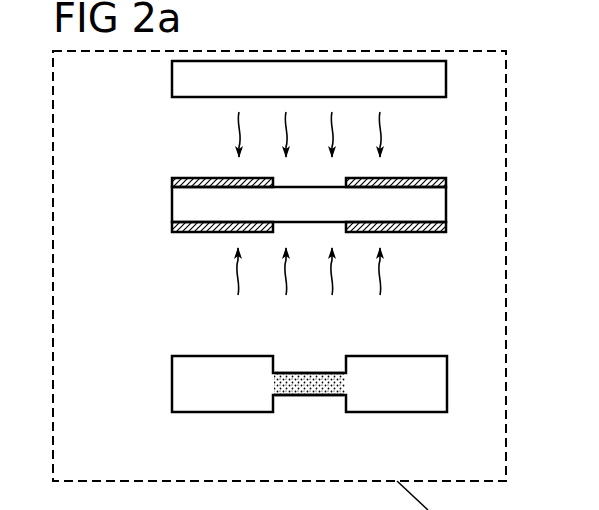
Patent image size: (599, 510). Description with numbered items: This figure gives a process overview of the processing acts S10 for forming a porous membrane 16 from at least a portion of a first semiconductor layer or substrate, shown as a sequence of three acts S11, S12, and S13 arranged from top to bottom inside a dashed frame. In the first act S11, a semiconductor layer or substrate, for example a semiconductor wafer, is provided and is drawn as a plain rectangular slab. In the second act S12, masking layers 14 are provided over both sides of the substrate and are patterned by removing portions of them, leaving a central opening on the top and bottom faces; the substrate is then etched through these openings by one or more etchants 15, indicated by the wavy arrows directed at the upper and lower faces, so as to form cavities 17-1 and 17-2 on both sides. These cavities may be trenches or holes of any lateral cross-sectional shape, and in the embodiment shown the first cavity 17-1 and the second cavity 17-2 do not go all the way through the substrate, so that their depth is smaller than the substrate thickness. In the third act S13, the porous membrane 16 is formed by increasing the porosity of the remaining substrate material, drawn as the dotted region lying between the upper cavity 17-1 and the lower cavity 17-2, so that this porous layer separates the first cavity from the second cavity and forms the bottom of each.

The masking layer 14 is at (447, 178).
The etchant 15 is at (399, 134).
The porous membrane 16 is at (289, 404).
The first cavity 17-1 is at (326, 359).
The second cavity 17-2 is at (331, 404).
The processing acts of forming a porous membrane S10 is at (506, 260).
The act of providing a semiconductor layer/substrate S11 is at (154, 81).
The act of providing and patterning masking layers and etching cavities S12 is at (156, 204).
The act of forming the porous membrane S13 is at (158, 389).